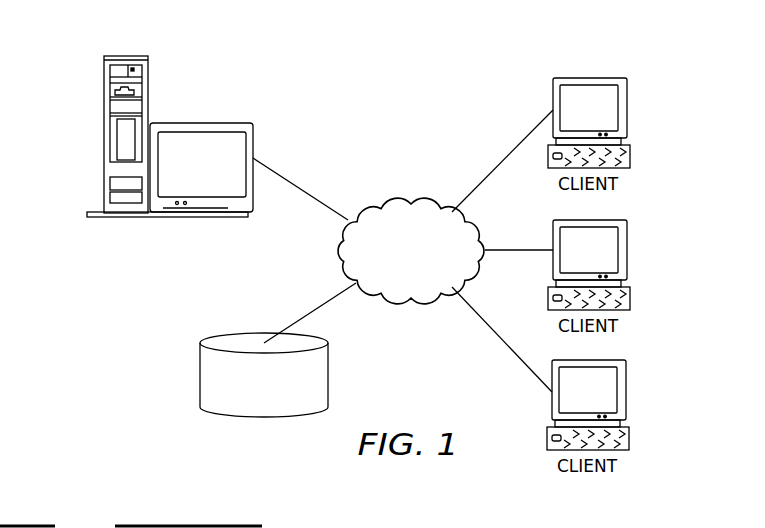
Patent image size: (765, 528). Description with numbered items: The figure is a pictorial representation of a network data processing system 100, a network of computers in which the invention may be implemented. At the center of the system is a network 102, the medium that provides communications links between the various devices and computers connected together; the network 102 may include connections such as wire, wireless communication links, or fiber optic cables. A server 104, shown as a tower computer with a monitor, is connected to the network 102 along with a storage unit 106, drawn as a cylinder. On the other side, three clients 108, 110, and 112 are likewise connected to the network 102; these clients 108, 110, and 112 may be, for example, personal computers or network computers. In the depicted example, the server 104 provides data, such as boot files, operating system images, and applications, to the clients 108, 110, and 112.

The network data processing system 100 is at (463, 90).
The network 102 is at (382, 203).
The server 104 is at (104, 137).
The storage unit 106 is at (200, 372).
The client 108 is at (627, 109).
The client 110 is at (626, 250).
The client 112 is at (624, 388).